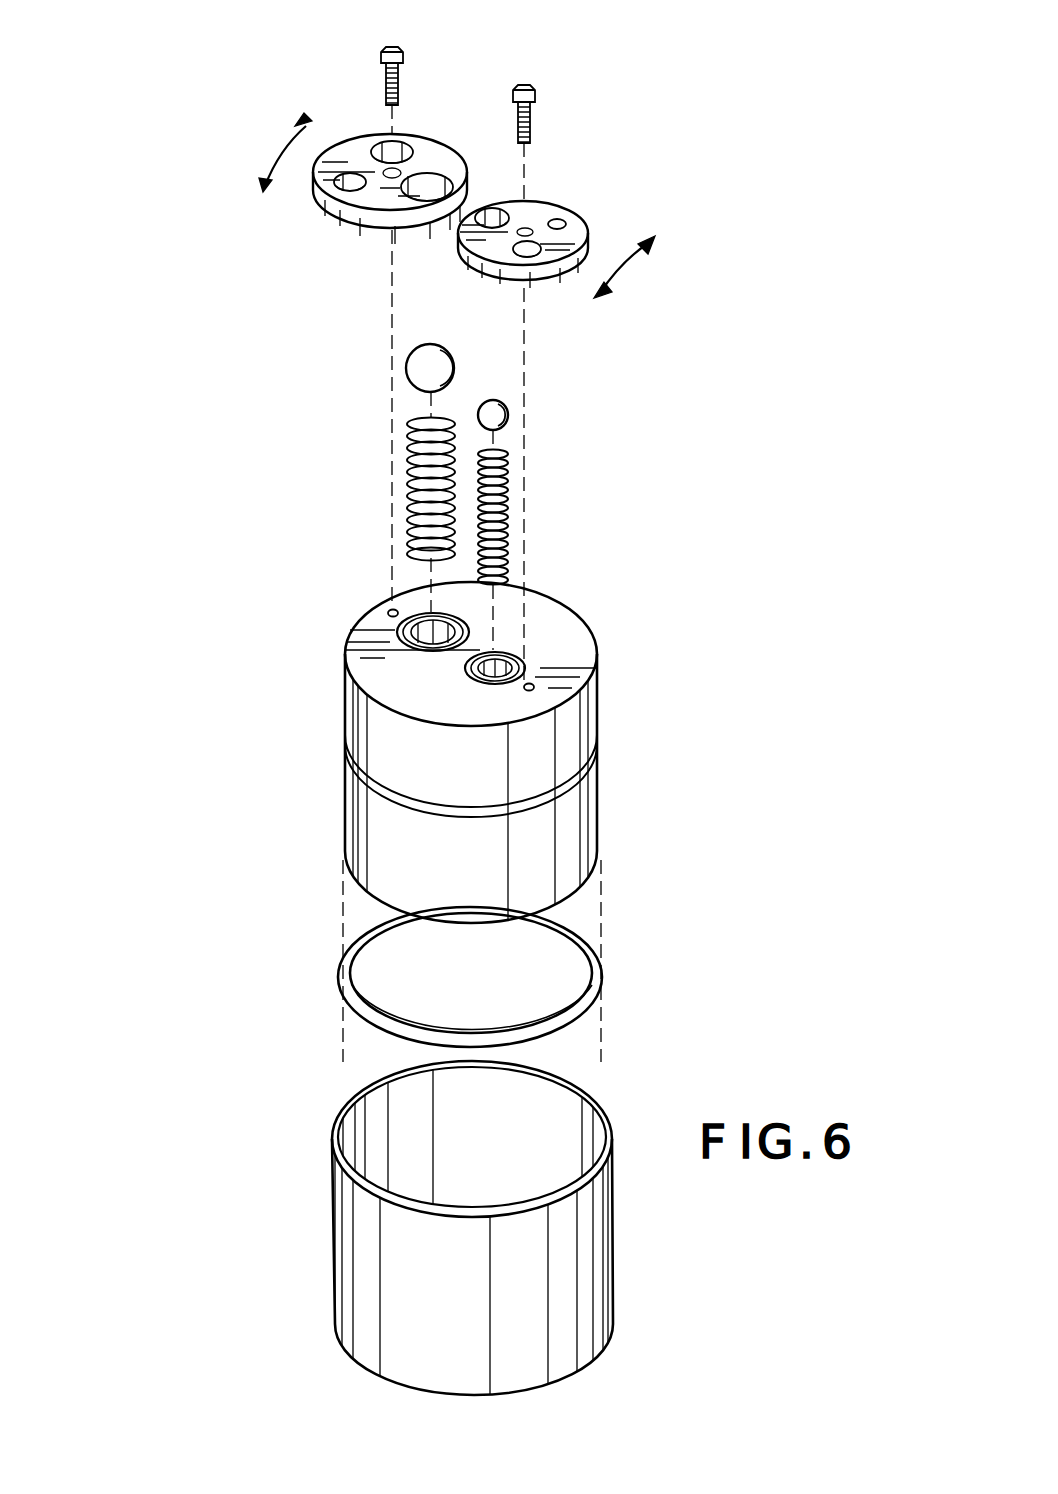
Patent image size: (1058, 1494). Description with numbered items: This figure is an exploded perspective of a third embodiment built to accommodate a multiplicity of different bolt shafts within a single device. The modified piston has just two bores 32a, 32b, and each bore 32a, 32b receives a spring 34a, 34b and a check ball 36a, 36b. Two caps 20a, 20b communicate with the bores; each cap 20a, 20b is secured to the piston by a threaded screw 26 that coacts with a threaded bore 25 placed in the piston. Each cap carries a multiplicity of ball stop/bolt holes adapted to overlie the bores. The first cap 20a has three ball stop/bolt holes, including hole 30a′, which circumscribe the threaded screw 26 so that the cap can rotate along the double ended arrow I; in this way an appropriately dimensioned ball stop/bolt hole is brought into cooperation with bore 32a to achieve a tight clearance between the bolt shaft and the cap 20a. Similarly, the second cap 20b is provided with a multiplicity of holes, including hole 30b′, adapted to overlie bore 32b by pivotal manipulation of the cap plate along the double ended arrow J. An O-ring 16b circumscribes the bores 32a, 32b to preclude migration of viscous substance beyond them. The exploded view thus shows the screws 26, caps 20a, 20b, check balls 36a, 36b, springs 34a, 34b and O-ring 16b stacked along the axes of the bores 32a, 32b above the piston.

The threaded screw 26 is at (394, 57).
The cap 20a is at (428, 147).
The cap 20b is at (561, 204).
The ball stop/bolt hole 30a′ is at (415, 196).
The hole 30b′ is at (492, 212).
The double ended arrow I is at (272, 152).
The double ended arrow J is at (640, 268).
The check ball 36a is at (418, 364).
The check ball 36b is at (508, 414).
The spring 34a is at (408, 474).
The spring 34b is at (508, 519).
The O-ring 16b is at (398, 628).
The bore 32a is at (395, 638).
The bore 32b is at (481, 677).
The threaded bore 25 is at (392, 609).